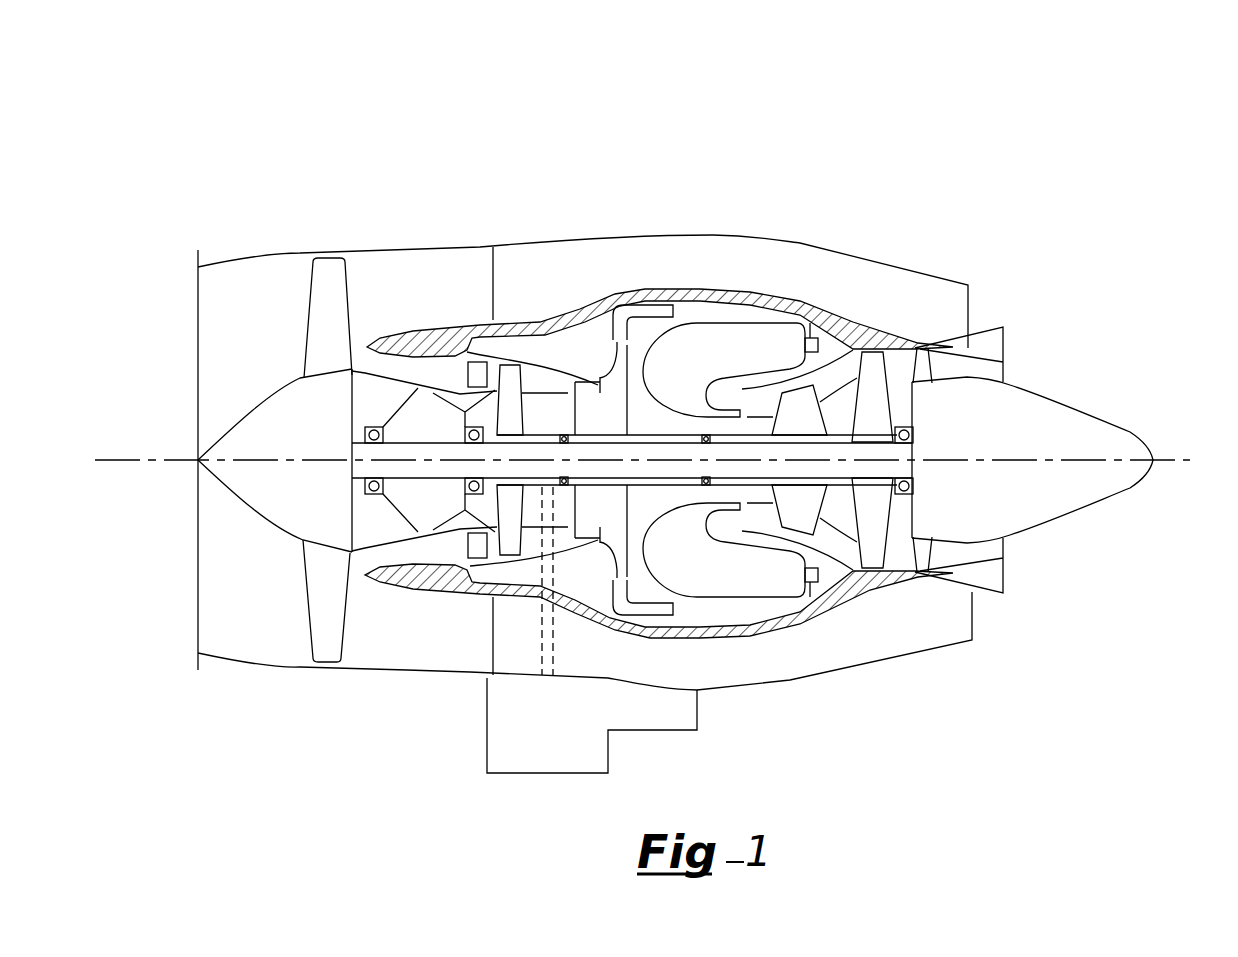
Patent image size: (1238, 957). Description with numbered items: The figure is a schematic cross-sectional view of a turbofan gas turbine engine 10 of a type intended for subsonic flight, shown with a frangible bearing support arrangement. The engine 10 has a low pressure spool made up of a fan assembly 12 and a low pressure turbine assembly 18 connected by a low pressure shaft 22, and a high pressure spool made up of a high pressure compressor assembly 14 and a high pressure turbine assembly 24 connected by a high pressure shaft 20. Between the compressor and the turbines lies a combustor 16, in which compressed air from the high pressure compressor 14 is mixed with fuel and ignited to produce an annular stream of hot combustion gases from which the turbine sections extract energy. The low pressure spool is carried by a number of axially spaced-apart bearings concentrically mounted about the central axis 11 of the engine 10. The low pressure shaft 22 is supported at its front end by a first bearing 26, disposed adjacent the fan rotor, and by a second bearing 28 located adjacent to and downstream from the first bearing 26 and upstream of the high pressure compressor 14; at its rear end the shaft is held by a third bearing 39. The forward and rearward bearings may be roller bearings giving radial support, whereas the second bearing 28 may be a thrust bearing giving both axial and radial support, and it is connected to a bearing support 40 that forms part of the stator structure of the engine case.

The turbofan gas turbine engine 10 is at (855, 177).
The central axis 11 is at (1187, 458).
The fan assembly 12 is at (324, 592).
The high pressure compressor assembly 14 is at (598, 383).
The combustor 16 is at (725, 338).
The low pressure turbine assembly 18 is at (873, 527).
The high pressure shaft 20 is at (530, 363).
The low pressure shaft 22 is at (403, 479).
The high pressure turbine assembly 24 is at (793, 517).
The first bearing 26 is at (370, 427).
The second bearing 28 is at (481, 508).
The third bearing 39 is at (902, 427).
The bearing support 40 is at (460, 398).